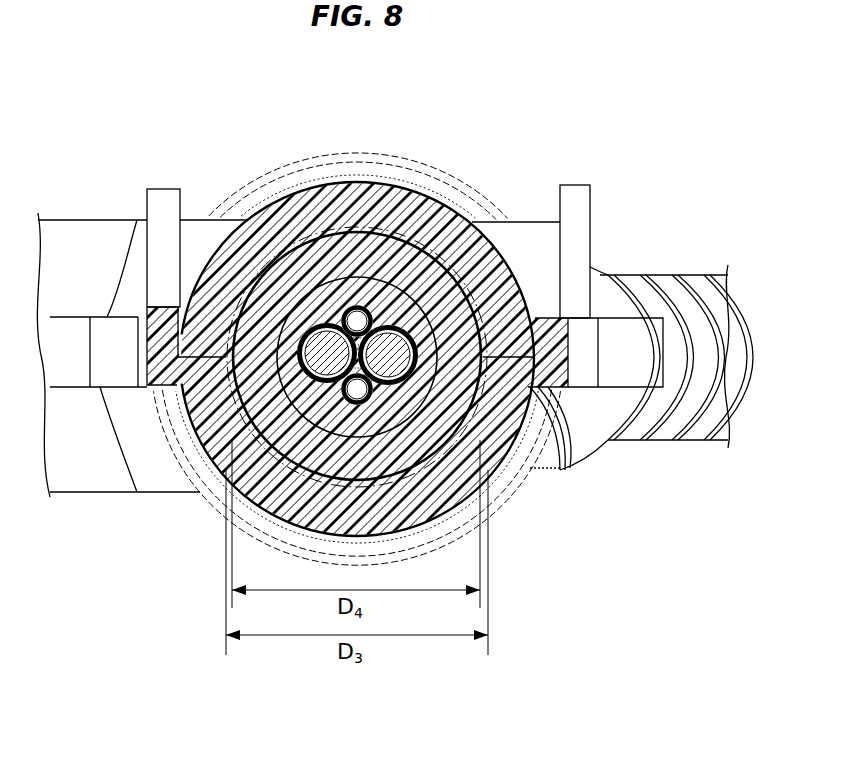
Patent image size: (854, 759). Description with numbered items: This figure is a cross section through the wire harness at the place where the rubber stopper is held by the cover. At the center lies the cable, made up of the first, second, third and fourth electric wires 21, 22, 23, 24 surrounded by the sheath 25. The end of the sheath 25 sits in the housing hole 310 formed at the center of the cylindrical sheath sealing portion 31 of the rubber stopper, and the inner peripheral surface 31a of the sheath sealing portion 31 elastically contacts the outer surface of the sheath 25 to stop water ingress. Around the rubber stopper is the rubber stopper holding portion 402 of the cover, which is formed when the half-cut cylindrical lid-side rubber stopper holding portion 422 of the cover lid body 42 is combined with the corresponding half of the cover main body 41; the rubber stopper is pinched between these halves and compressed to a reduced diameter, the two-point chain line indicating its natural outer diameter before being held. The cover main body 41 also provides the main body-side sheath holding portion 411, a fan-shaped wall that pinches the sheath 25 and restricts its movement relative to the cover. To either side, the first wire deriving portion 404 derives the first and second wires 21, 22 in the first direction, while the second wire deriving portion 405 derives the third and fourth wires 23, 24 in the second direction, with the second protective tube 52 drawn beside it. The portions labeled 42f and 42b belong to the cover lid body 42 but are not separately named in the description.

The first electric wire 21 is at (327, 352).
The second electric wire 22 is at (389, 353).
The third electric wire 23 is at (357, 320).
The fourth electric wire 24 is at (357, 390).
The sheath 25 is at (388, 402).
The sheath sealing portion 31 is at (247, 217).
The inner peripheral surface 31a is at (310, 413).
The housing hole 310 is at (374, 275).
The cover main body 41 is at (500, 503).
The main body-side sheath holding portion 411 is at (220, 487).
The cover lid body 42 is at (380, 154).
The housing front flange 42f is at (203, 228).
The housing rear flange 42b is at (518, 232).
The rubber stopper holding portion 402 is at (342, 175).
The first wire deriving portion 404 is at (124, 217).
The second wire deriving portion 405 is at (590, 463).
The lid-side rubber stopper holding portion 422 is at (304, 183).
The second protective tube 52 is at (667, 283).